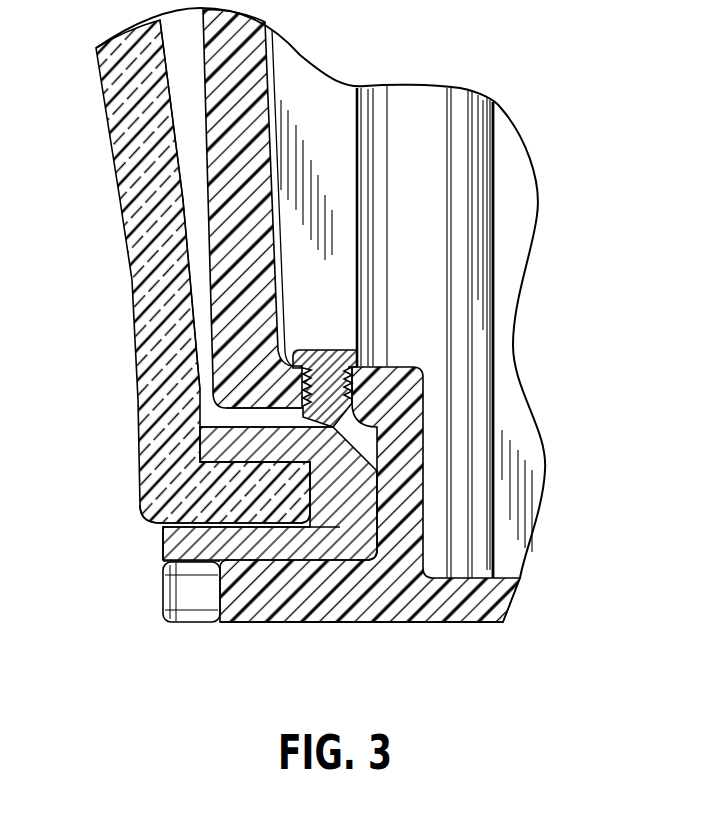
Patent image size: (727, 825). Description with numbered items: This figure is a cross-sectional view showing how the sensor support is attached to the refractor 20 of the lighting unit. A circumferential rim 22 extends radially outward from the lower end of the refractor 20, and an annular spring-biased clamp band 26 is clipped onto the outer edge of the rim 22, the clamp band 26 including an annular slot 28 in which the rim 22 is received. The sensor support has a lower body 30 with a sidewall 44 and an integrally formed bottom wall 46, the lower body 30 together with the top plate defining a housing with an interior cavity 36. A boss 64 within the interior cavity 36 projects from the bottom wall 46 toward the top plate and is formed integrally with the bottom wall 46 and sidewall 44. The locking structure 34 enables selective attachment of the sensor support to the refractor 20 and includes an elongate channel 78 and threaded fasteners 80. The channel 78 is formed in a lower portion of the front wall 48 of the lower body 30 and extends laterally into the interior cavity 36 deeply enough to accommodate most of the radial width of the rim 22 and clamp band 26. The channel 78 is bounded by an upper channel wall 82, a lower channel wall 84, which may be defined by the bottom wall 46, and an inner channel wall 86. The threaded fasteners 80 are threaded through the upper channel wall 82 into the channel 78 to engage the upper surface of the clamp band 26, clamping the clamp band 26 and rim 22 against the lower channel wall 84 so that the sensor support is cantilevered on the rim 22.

The refractor 20 is at (142, 303).
The circumferential rim 22 is at (273, 487).
The sidewall 44 is at (200, 93).
The front wall 48 is at (225, 157).
The interior cavity 36 is at (322, 174).
The boss 64 is at (440, 152).
The threaded fastener 80 is at (316, 358).
The upper channel wall 82 is at (362, 382).
The inner channel wall 86 is at (408, 497).
The lower body 30 is at (372, 626).
The bottom wall 46 is at (481, 610).
The channel 78 is at (245, 412).
The annular slot 28 is at (330, 510).
The clamp band 26 is at (163, 540).
The lower channel wall 84 is at (197, 603).
The locking structure 34 is at (140, 565).